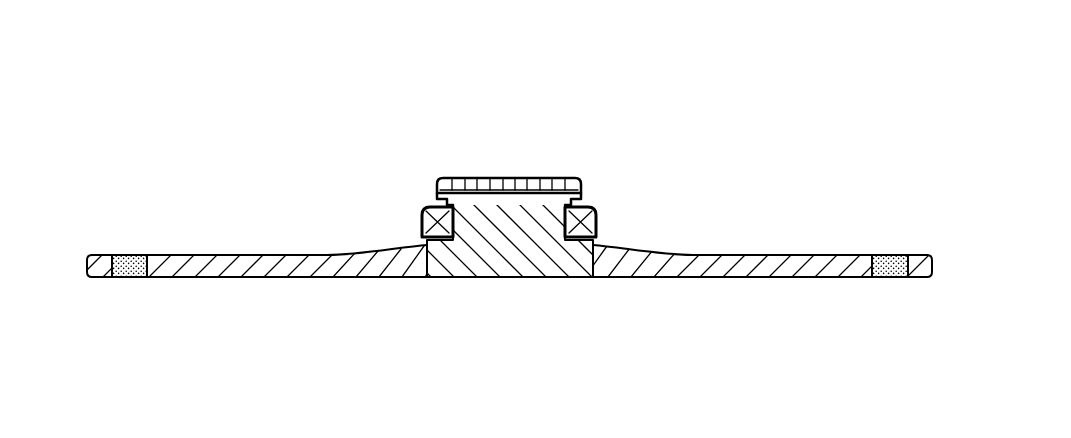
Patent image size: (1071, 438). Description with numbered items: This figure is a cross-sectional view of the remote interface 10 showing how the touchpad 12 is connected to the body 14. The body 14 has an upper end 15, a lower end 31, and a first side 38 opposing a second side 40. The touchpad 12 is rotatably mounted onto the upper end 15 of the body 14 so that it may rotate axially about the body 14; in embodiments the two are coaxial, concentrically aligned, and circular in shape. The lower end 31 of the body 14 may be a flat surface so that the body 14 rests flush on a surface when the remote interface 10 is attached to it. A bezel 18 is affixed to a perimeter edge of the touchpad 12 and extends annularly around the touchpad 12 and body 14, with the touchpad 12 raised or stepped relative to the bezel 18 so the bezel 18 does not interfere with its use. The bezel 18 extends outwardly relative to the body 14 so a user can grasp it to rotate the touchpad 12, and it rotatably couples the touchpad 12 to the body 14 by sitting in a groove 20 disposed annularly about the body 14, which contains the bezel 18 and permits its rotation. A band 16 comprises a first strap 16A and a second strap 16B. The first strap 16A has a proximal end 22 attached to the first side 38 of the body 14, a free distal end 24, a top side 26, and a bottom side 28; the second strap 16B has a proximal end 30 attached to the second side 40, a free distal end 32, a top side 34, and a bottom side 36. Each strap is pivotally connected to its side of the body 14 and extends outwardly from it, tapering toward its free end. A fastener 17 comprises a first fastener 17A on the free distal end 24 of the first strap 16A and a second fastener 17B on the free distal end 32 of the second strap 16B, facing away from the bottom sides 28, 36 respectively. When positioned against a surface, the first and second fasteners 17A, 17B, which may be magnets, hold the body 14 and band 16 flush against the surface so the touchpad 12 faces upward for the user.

The remote interface 10 is at (607, 106).
The touchpad 12 is at (535, 177).
The body 14 is at (568, 265).
The upper end 15 is at (480, 197).
The band 16 is at (503, 215).
The first strap 16A is at (297, 200).
The second strap 16B is at (795, 240).
The fastener 17 is at (509, 211).
The first fastener 17A is at (128, 255).
The second fastener 17B is at (890, 255).
The bezel 18 is at (594, 206).
The groove 20 is at (597, 219).
The proximal end 22 is at (410, 277).
The free distal end 24 is at (87, 255).
The top side 26 is at (237, 255).
The bottom side 28 is at (230, 277).
The proximal end 30 is at (617, 277).
The lower end 31 is at (528, 277).
The free distal end 32 is at (930, 258).
The top side 34 is at (823, 255).
The bottom side 36 is at (793, 277).
The first side 38 is at (422, 240).
The second side 40 is at (613, 246).